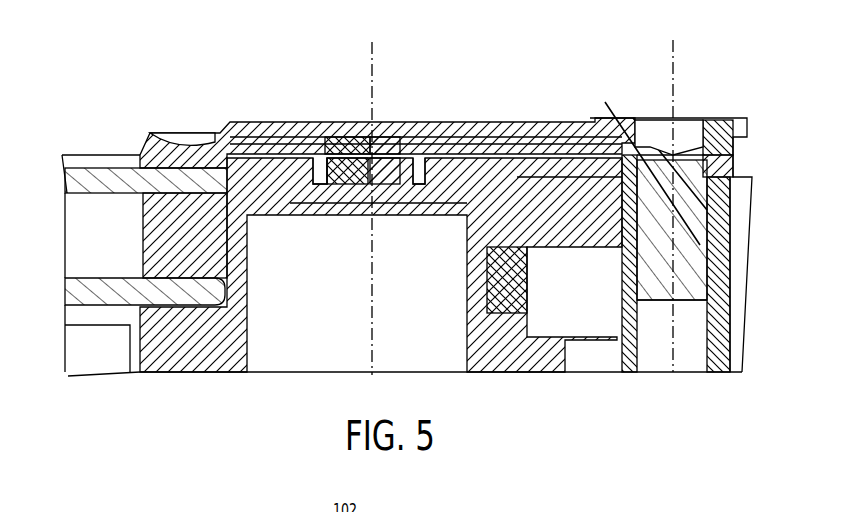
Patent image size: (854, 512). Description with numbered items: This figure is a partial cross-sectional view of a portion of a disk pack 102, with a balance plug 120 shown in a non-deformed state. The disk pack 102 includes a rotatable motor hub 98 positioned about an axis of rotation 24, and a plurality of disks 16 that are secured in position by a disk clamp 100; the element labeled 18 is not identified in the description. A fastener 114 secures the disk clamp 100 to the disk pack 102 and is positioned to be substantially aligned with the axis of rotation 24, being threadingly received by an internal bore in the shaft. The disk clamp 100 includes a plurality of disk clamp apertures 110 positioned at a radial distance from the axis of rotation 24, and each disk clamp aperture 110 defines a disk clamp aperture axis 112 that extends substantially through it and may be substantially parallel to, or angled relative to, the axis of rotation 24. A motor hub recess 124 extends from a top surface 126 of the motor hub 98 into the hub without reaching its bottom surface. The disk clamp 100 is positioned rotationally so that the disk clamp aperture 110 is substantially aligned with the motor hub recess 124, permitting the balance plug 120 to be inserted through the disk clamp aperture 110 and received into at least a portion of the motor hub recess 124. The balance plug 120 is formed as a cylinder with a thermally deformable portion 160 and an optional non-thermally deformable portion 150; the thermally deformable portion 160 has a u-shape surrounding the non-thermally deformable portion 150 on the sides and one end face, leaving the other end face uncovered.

The disk 16 is at (77, 180).
The clamp ring lower portion 18 is at (73, 292).
The axis of rotation 24 is at (682, 78).
The motor hub 98 is at (460, 198).
The disk clamp 100 is at (150, 154).
The disk pack 102 is at (352, 72).
The disk clamp aperture 110 is at (403, 135).
The disk clamp aperture axis 112 is at (380, 80).
The fastener 114 is at (610, 118).
The balance plug 120 is at (349, 146).
The motor hub recess 124 is at (318, 184).
The top surface 126 is at (268, 150).
The non-thermally deformable portion 150 is at (387, 182).
The thermally deformable portion 160 is at (333, 182).